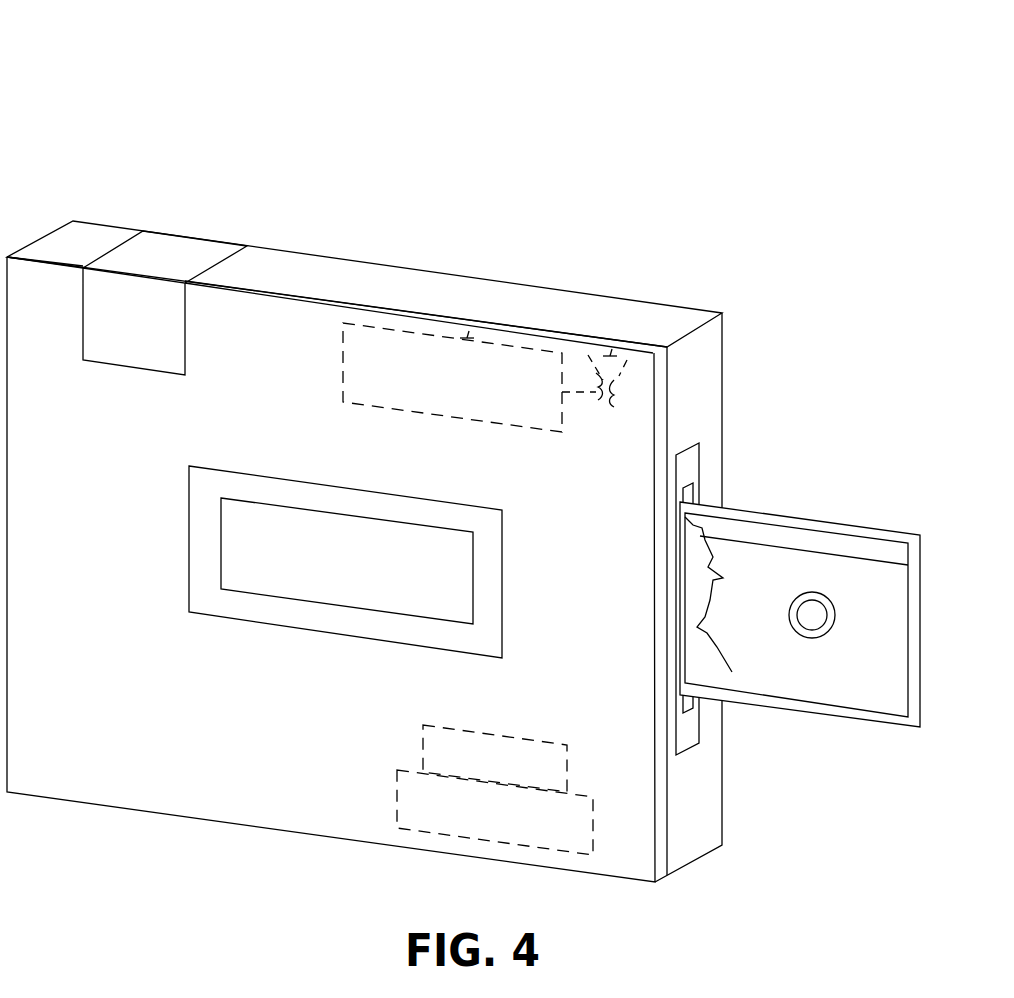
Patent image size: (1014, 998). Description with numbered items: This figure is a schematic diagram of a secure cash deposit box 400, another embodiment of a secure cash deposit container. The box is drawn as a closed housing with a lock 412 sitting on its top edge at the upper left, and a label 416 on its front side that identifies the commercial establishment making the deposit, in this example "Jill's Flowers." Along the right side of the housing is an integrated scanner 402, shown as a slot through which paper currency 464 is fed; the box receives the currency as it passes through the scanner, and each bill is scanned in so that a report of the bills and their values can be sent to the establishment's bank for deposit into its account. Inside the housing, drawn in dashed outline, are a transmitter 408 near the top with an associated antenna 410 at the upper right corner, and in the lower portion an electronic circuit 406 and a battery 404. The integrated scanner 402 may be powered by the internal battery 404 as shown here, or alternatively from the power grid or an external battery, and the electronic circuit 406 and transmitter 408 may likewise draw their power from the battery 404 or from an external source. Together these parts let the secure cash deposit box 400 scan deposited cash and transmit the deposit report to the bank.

The secure cash deposit box 400 is at (92, 86).
The integrated scanner 402 is at (688, 467).
The battery 404 is at (595, 830).
The electronic circuit 406 is at (570, 773).
The transmitter 408 is at (469, 331).
The antenna 410 is at (612, 349).
The lock 412 is at (178, 248).
The label 416 is at (203, 542).
The paper currency 464 is at (820, 528).